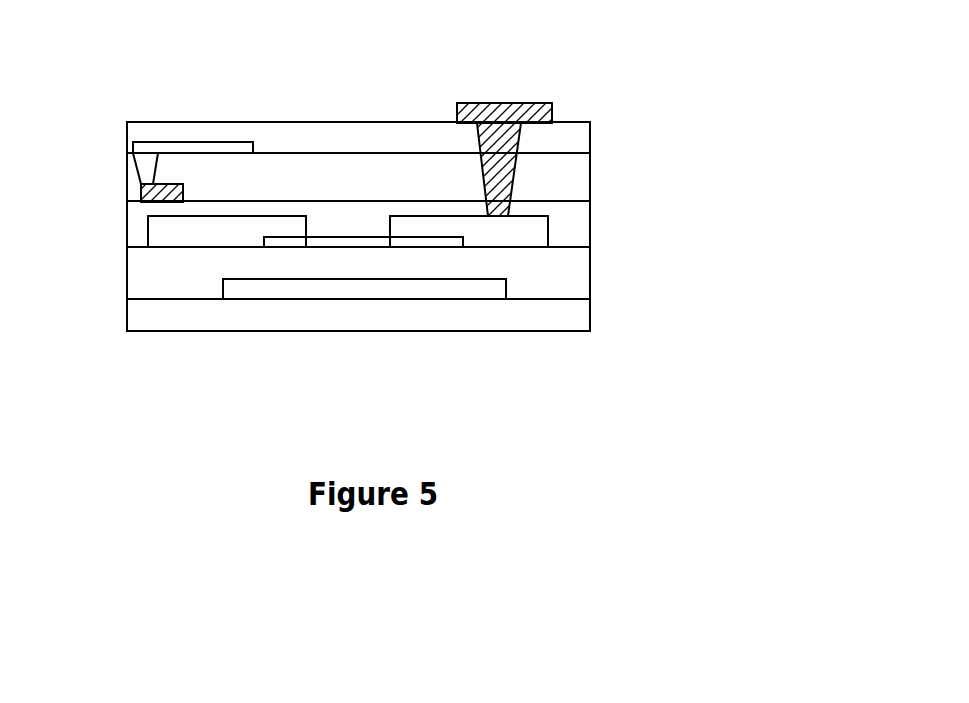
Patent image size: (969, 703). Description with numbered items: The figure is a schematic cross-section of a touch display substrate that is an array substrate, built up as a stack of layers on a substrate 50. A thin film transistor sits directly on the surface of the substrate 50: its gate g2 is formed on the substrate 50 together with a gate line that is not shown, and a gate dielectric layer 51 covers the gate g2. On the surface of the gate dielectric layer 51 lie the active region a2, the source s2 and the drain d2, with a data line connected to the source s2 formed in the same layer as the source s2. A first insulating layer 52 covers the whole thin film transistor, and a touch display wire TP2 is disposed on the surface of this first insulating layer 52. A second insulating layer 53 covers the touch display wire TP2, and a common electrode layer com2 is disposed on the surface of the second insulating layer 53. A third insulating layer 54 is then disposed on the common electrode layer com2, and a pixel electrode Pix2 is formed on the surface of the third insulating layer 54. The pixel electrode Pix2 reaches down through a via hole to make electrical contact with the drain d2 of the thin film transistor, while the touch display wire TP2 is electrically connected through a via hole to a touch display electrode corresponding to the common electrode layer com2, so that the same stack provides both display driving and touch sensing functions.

The substrate 50 is at (360, 330).
The gate dielectric layer 51 is at (573, 284).
The first insulating layer 52 is at (573, 226).
The second insulating layer 53 is at (573, 178).
The third insulating layer 54 is at (573, 132).
The gate g2 is at (313, 293).
The source s2 is at (184, 239).
The active region a2 is at (291, 240).
The drain d2 is at (508, 239).
The pixel electrode Pix2 is at (500, 103).
The common electrode layer com2 is at (220, 140).
The touch display wire TP2 is at (158, 192).